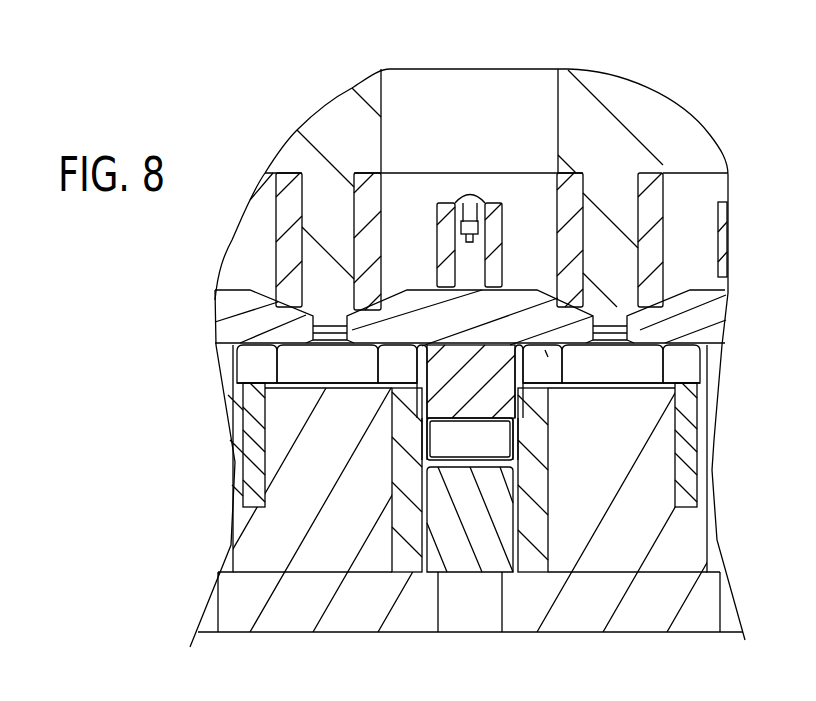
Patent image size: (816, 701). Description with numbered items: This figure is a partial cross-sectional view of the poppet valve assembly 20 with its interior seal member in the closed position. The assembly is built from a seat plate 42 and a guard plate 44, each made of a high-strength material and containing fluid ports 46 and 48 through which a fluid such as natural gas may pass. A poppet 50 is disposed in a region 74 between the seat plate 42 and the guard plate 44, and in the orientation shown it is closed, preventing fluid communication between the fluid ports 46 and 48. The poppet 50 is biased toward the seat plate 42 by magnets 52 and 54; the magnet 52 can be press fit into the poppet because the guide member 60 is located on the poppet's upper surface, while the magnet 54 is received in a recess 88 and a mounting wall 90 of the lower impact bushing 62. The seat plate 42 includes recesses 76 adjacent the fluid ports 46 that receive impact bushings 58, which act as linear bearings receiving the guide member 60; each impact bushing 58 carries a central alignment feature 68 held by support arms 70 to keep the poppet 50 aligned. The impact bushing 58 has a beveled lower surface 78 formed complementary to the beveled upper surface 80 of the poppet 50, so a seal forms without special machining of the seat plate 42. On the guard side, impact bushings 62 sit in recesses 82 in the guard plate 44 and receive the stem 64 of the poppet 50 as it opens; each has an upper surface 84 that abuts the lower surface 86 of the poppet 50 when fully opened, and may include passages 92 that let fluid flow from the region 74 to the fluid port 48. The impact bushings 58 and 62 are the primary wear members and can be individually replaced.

The valve assembly 20 is at (243, 134).
The seat plate 42 is at (340, 114).
The guard plate 44 is at (315, 603).
The fluid port 46 is at (388, 81).
The fluid port 48 is at (490, 634).
The poppet 50 is at (367, 342).
The magnet 52 is at (481, 395).
The magnet 54 is at (478, 522).
The impact bushing 58 is at (375, 199).
The guide member 60 is at (470, 282).
The impact bushing 62 is at (405, 412).
The stem 64 is at (425, 430).
The alignment feature 68 is at (494, 227).
The support arm 70 is at (470, 193).
The region 74 is at (258, 367).
The recess 76 is at (636, 203).
The lower surface 78 is at (352, 326).
The upper surface 80 is at (363, 326).
The recess 82 is at (548, 545).
The upper surface 84 is at (545, 372).
The lower surface 86 is at (548, 356).
The recess 88 is at (520, 532).
The mounting wall 90 is at (493, 482).
The passage 92 is at (400, 488).